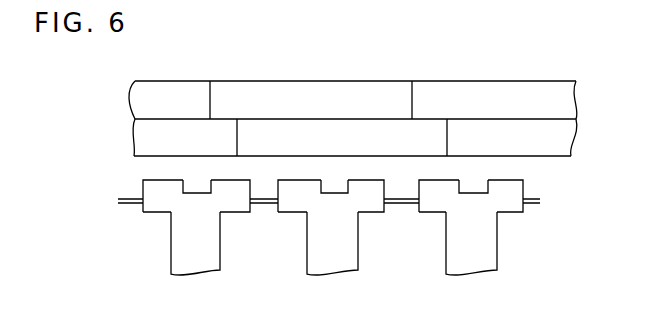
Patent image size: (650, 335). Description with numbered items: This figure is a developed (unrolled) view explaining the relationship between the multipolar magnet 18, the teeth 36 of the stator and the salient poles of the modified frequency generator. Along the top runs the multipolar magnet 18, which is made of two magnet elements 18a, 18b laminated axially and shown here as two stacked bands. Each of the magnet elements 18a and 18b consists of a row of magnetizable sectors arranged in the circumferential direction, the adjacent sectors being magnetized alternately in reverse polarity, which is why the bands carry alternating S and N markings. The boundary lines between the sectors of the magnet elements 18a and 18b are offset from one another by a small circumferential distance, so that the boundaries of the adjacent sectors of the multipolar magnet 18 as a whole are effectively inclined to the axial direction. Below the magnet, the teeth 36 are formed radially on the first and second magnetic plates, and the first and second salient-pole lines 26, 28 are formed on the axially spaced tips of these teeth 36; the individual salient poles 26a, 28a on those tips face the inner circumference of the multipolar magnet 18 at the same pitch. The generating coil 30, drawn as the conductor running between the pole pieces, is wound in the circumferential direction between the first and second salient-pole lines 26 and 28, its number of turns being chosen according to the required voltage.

The multipolar magnet 18 is at (514, 81).
The magnet element 18a is at (559, 104).
The magnet element 18b is at (559, 142).
The first salient-pole line 26 is at (132, 186).
The second salient-pole line 28 is at (356, 238).
The salient pole 26a is at (172, 181).
The second salient pole 28a is at (335, 186).
The generating coil 30 is at (529, 194).
The teeth 36 is at (203, 270).